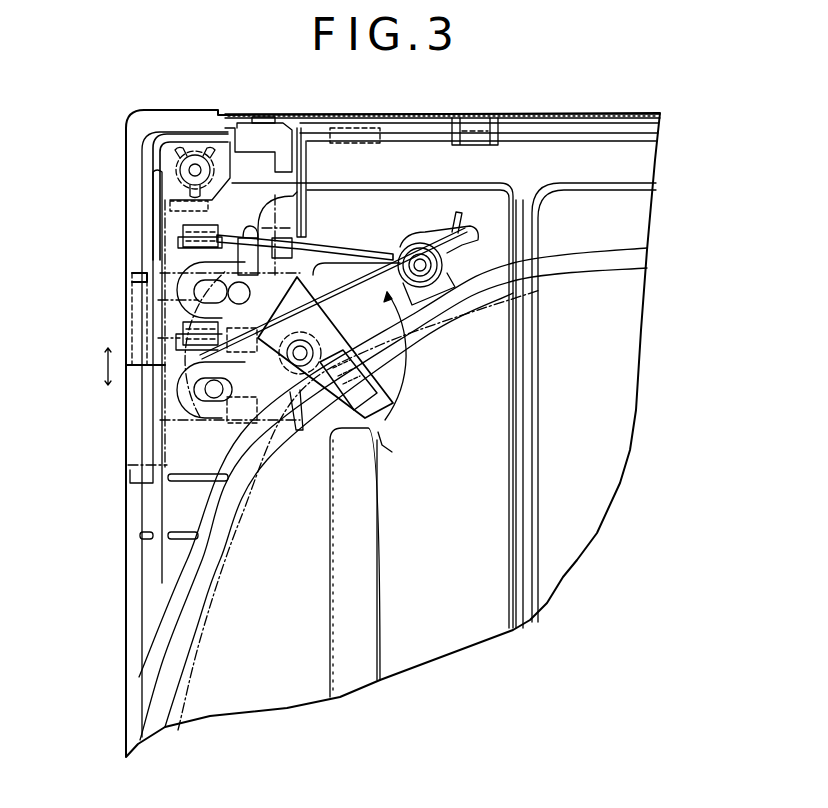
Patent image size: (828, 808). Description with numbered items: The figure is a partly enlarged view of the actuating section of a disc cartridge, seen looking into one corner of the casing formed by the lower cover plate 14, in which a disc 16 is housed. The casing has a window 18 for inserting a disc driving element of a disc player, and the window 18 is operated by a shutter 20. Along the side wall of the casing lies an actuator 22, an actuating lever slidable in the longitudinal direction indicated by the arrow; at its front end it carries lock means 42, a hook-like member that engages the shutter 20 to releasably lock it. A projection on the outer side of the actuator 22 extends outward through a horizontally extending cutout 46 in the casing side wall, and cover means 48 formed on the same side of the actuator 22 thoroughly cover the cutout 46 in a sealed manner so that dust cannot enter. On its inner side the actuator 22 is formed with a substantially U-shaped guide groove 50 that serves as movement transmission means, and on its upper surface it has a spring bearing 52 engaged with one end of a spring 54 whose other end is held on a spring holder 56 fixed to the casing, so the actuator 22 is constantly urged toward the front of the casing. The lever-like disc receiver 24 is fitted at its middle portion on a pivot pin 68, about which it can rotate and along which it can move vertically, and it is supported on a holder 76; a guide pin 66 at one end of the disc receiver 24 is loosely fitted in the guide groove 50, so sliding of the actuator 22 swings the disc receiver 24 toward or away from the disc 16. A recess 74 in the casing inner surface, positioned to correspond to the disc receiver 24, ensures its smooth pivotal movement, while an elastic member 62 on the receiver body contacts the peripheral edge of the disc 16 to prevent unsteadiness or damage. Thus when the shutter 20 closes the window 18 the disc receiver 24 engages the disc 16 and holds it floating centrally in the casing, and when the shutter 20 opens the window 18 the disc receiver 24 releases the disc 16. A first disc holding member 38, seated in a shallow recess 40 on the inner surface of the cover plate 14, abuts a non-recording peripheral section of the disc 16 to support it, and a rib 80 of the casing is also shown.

The lower cover plate 14 is at (125, 632).
The disc 16 is at (165, 712).
The window 18 is at (535, 410).
The shutter 20 is at (480, 113).
The actuator 22 is at (247, 157).
The disc receiver 24 is at (397, 402).
The first disc holding member 38 is at (328, 542).
The shallow recess 40 is at (328, 627).
The lock means 42 is at (287, 122).
The cutout (slot) 46 is at (152, 428).
The cover means 48 is at (158, 183).
The guide groove 50 is at (205, 262).
The spring bearing 52 is at (182, 237).
The spring 54 is at (362, 252).
The spring holder 56 is at (412, 252).
The elastic member 62 is at (388, 428).
The guide pin 66 is at (255, 293).
The pivot pin 68 is at (312, 322).
The recess 74 is at (410, 380).
The holder 76 is at (298, 405).
The rib 80 is at (166, 482).